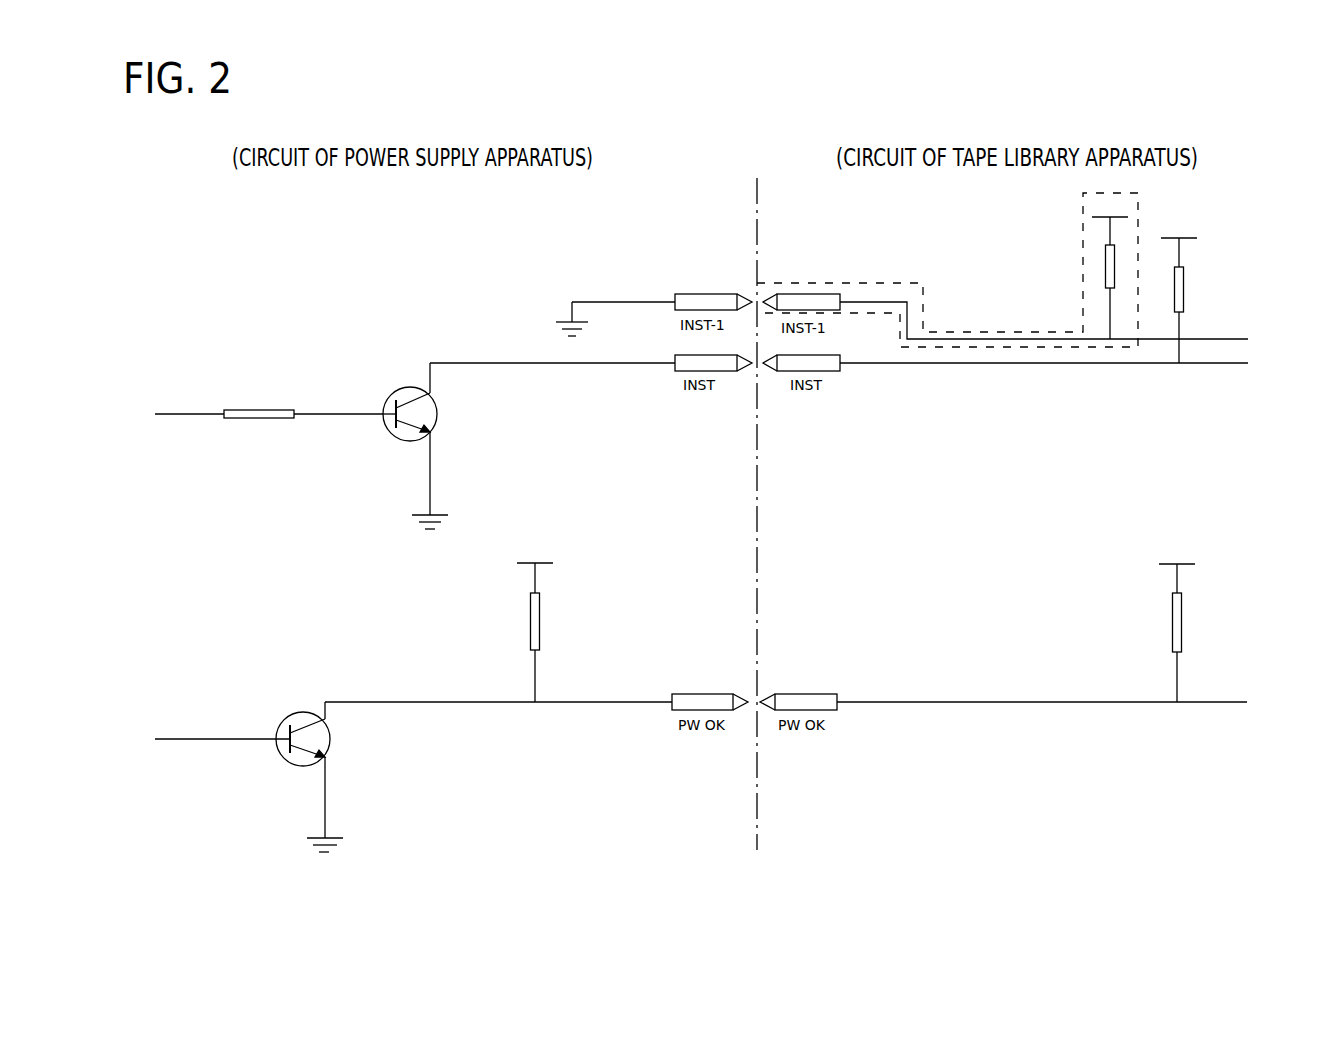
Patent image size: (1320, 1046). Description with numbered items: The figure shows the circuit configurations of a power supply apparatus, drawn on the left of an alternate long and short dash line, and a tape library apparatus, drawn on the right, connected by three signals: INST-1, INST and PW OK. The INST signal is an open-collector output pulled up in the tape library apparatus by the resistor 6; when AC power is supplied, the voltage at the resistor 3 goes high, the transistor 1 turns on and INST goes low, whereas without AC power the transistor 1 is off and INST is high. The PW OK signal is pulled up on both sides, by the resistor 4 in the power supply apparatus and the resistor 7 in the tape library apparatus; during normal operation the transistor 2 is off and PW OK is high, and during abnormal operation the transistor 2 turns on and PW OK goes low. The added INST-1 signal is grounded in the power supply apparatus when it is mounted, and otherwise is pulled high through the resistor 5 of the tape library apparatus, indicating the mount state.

The transistor 1 is at (437, 412).
The transistor 2 is at (332, 738).
The resistor 3 is at (260, 409).
The resistor 4 is at (540, 619).
The resistor 5 is at (1114, 266).
The resistor 6 is at (1184, 289).
The resistor 7 is at (1183, 620).